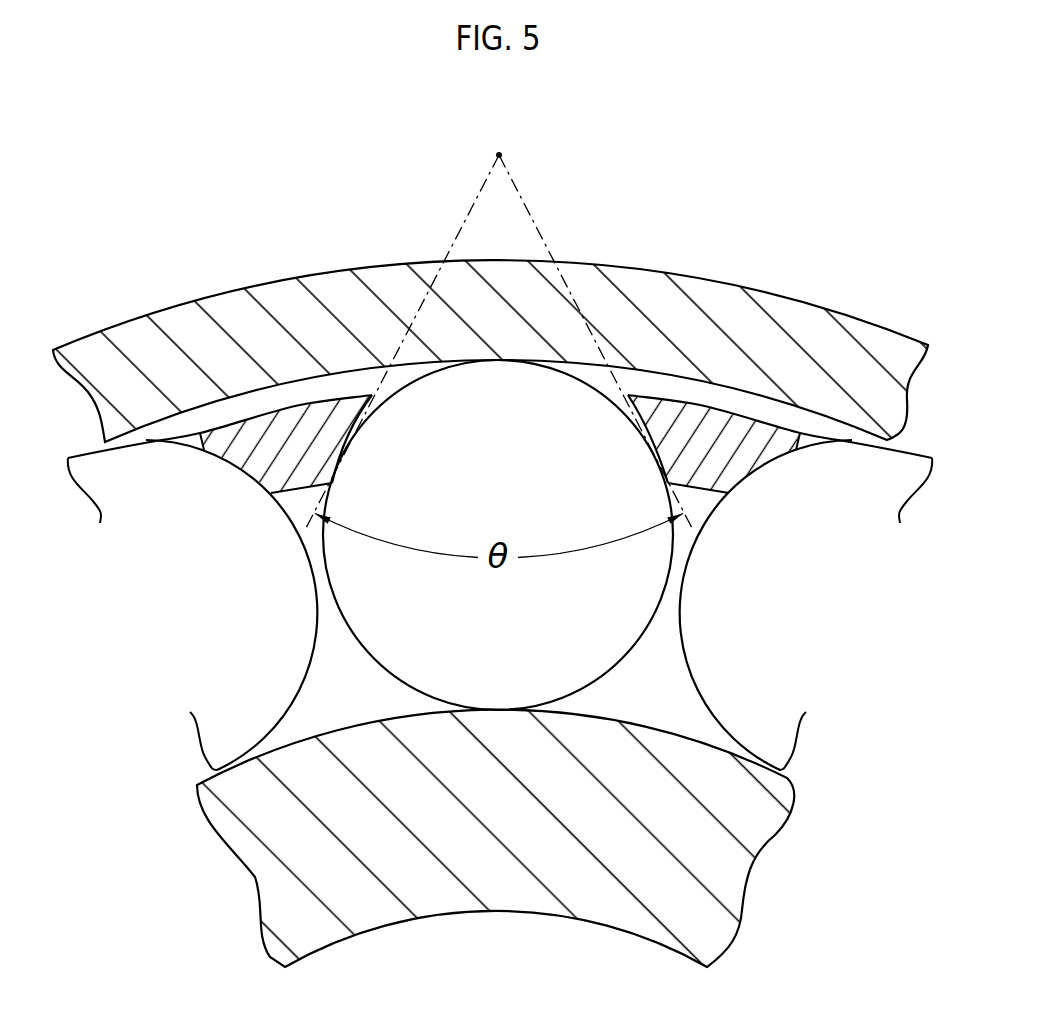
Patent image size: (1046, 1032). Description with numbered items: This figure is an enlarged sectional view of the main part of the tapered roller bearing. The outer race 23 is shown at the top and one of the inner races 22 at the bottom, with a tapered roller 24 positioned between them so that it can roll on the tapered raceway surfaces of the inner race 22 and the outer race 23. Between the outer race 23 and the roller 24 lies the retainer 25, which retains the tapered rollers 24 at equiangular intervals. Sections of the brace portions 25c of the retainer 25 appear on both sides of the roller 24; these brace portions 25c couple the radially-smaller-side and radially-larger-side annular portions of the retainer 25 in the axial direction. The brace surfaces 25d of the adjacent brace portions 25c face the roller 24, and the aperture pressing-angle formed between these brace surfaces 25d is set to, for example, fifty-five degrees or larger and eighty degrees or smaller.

The inner race 22 is at (514, 895).
The outer race 23 is at (793, 320).
The tapered roller 24 is at (570, 397).
The retainer 25 is at (500, 485).
The brace portion 25c is at (262, 427).
The brace surface 25d is at (357, 431).